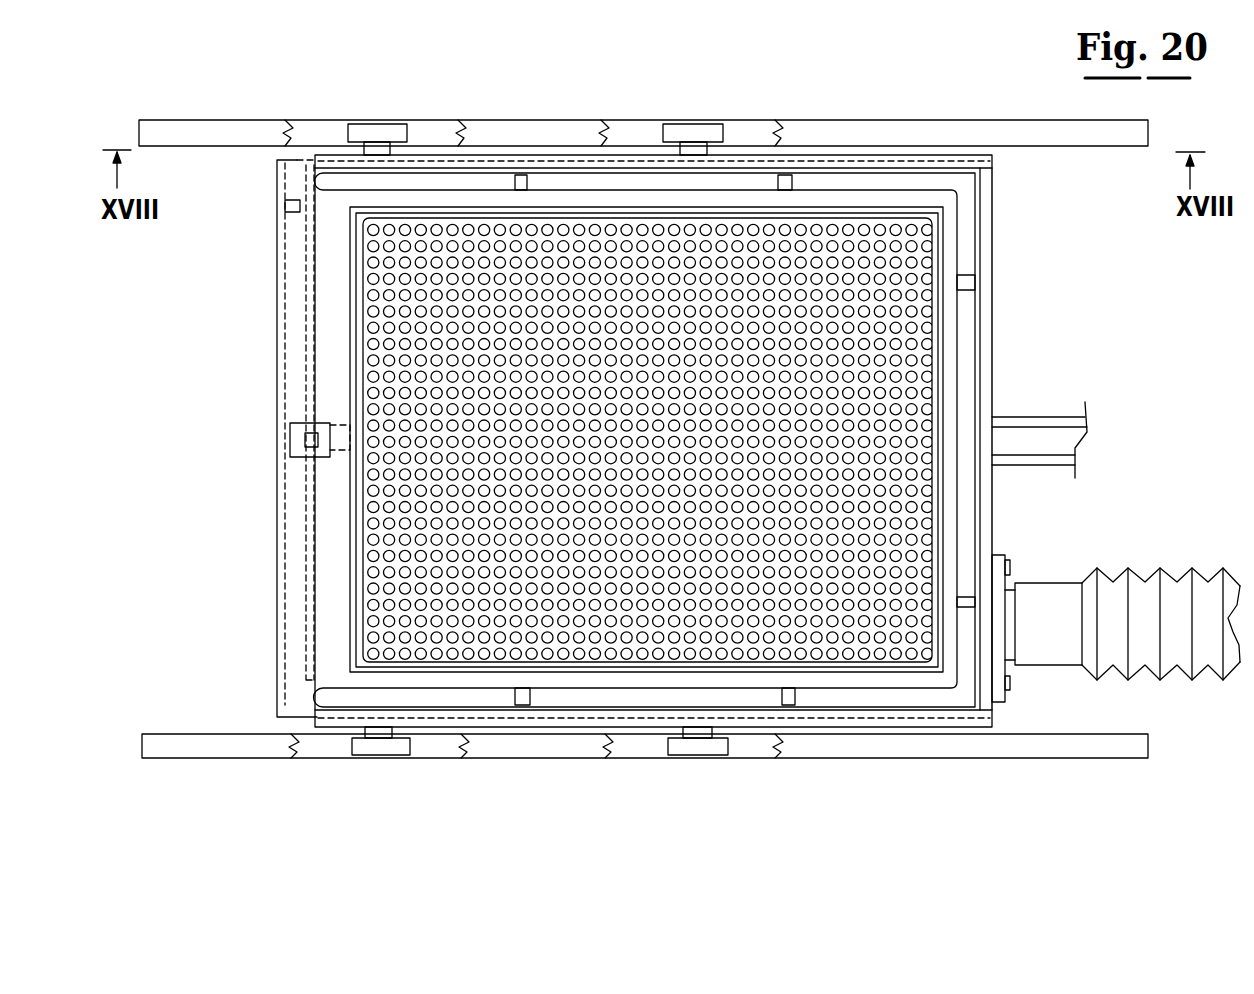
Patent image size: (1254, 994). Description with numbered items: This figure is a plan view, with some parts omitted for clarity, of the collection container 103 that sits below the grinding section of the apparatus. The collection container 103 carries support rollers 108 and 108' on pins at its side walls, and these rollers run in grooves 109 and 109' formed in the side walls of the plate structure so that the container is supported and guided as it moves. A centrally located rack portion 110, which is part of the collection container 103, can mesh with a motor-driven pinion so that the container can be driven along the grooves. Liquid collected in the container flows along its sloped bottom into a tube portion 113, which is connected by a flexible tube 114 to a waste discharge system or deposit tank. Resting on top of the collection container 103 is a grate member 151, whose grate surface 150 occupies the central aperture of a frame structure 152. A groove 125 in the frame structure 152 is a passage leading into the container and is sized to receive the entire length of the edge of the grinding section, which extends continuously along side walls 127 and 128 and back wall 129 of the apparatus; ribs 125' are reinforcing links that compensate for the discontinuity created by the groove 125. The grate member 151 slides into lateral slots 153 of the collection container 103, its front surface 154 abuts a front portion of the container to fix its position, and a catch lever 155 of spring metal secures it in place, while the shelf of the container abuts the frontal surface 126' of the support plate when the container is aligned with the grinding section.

The collection container 103 is at (235, 550).
The support roller 108 is at (409, 449).
The support roller 108' is at (698, 440).
The groove 109 is at (643, 106).
The groove 109' is at (645, 783).
The rack portion 110 is at (1005, 415).
The tube portion 113 is at (1008, 590).
The flexible tube 114 is at (1196, 582).
The groove 125 is at (993, 435).
The ribs 125' is at (804, 439).
The frontal surface 126' is at (257, 420).
The side wall 127 is at (875, 152).
The side wall 128 is at (875, 728).
The back wall 129 is at (997, 311).
The grate surface 150 is at (370, 236).
The grate member 151 is at (333, 257).
The frame structure 152 is at (590, 678).
The lateral slots 153 is at (312, 156).
The front surface 154 is at (282, 410).
The catch lever 155 is at (297, 440).